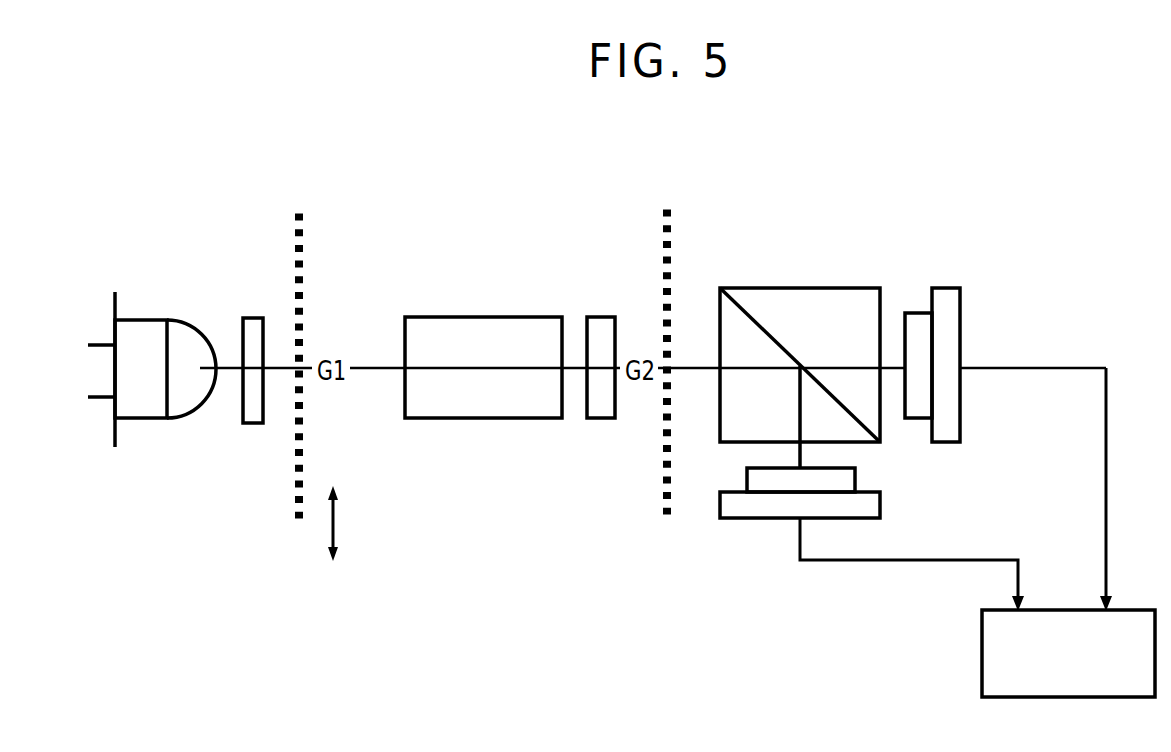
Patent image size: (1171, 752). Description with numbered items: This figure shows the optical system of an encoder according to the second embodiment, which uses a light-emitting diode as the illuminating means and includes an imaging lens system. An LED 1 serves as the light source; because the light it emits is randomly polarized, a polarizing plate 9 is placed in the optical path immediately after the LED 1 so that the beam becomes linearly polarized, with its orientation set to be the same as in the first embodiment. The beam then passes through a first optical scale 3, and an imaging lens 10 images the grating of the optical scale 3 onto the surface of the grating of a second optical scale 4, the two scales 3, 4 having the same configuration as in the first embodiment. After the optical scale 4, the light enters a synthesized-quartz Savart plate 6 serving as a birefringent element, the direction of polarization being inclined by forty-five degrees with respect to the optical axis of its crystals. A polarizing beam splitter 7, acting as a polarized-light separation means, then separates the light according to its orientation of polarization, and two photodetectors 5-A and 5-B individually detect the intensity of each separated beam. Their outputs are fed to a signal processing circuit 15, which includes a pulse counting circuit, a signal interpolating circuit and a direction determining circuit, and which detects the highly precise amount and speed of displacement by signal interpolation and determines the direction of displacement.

The LED 1 is at (142, 325).
The polarizing plate 9 is at (253, 320).
The optical scale 3 is at (298, 214).
The imaging lens 10 is at (465, 330).
The Savart plate 6 is at (603, 322).
The optical scale 4 is at (667, 212).
The polarizing beam splitter 7 is at (807, 297).
The photodetector 5-A is at (948, 298).
The photodetector 5-B is at (748, 512).
The signal processing circuit 15 is at (982, 647).